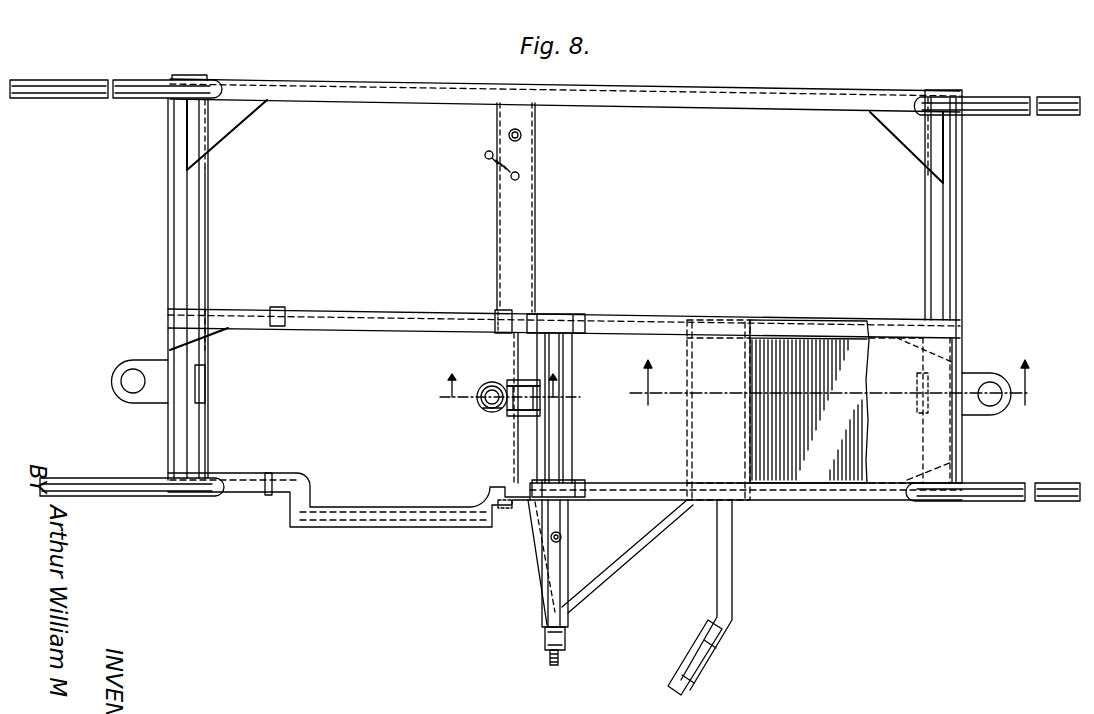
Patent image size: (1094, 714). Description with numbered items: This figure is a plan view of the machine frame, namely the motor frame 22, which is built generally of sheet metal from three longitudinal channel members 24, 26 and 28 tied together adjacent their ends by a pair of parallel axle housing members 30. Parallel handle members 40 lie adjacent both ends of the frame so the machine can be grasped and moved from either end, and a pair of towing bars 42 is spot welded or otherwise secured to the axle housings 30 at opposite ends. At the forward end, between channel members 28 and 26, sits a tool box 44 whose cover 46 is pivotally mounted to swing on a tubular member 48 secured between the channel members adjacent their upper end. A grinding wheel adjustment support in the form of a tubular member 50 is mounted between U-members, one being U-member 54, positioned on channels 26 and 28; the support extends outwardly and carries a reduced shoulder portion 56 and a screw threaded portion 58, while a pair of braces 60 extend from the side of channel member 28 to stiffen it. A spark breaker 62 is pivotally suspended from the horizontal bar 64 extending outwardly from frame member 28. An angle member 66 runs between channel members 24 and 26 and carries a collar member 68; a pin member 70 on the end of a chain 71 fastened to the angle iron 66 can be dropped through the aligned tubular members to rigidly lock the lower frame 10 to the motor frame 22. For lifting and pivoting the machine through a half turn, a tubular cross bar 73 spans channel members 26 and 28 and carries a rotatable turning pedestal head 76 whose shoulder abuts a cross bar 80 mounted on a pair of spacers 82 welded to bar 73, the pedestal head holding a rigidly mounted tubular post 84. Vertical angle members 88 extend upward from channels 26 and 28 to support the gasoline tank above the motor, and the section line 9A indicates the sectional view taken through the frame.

The motor frame 22 is at (832, 92).
The longitudinal channel member 24 is at (728, 108).
The longitudinal channel member 26 is at (424, 304).
The longitudinal channel member 28 is at (636, 476).
The axle housing member 30 is at (168, 233).
The handle member 40 is at (74, 99).
The towing bar 42 is at (125, 386).
The tool box 44 is at (800, 405).
The cover 46 is at (748, 355).
The tubular member 48 is at (692, 348).
The tubular member 50 is at (569, 574).
The U-member 54 is at (576, 498).
The reduced shoulder portion 56 is at (566, 644).
The screw threaded portion 58 is at (559, 665).
The brace 60 is at (534, 547).
The spark breaker 62 is at (714, 658).
The horizontal bar 64 is at (726, 582).
The angle member 66 is at (508, 213).
The collar member 68 is at (508, 135).
The pin member 70 is at (485, 158).
The chain 71 is at (520, 173).
The cross bar 73 is at (516, 470).
The turning pedestal head 76 is at (492, 382).
The cross bar 80 is at (520, 414).
The spacer 82 is at (527, 380).
The tubular post 84 is at (486, 410).
The vertical angle member 88 is at (283, 307).
The lower frame 10 is at (515, 394).
The section line 9A- 9A is at (840, 372).